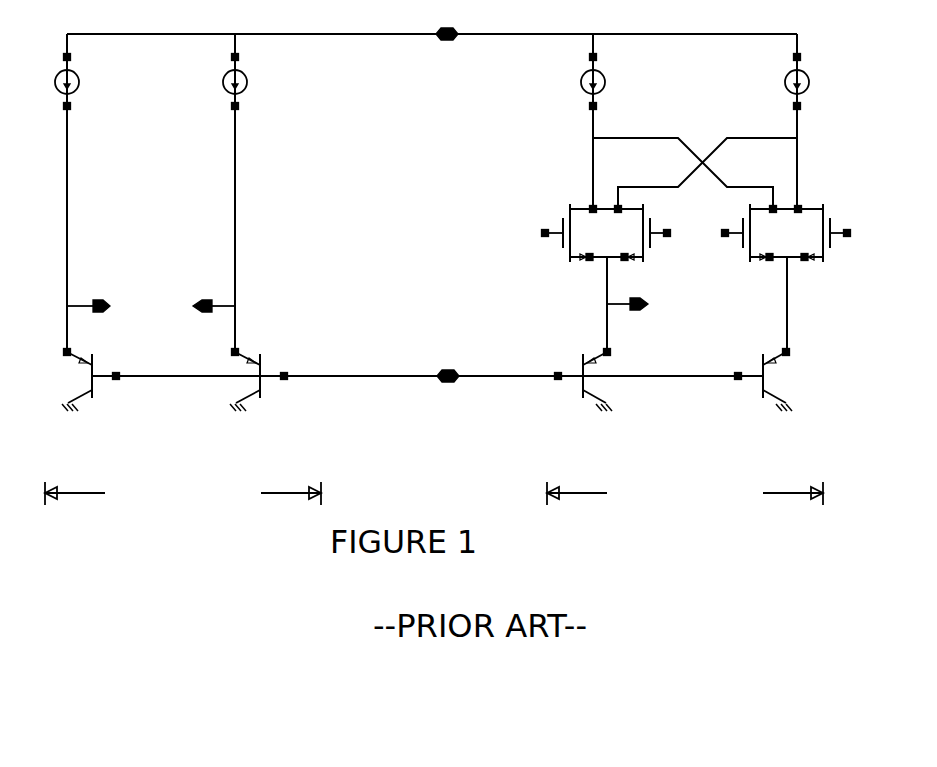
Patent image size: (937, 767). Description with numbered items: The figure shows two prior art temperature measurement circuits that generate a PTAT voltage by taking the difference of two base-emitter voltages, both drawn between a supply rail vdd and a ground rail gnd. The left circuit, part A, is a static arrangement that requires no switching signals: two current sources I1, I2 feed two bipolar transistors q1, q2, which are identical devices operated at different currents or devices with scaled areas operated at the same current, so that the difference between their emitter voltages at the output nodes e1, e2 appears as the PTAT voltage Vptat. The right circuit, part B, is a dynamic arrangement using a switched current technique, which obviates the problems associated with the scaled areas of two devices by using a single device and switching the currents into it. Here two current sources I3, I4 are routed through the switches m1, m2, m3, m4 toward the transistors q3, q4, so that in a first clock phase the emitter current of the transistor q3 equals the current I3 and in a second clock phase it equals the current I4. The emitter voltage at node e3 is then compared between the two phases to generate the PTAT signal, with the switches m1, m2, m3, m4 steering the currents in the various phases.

The positive supply rail vdd is at (432, 27).
The ground rail gnd is at (427, 368).
The current source I1 is at (54, 193).
The current source I2 is at (221, 193).
The current I3 is at (579, 121).
The current I4 is at (783, 121).
The switch m1 is at (546, 231).
The switch m2 is at (663, 231).
The switch m3 is at (725, 231).
The switch m4 is at (843, 231).
The bipolar transistor q1 is at (91, 380).
The bipolar transistor q2 is at (259, 380).
The single device q3 is at (580, 380).
The bipolar transistor q4 is at (761, 380).
The output terminal e1 is at (99, 307).
The output terminal e2 is at (201, 307).
The output terminal e3 is at (638, 306).
The PTAT voltage Vptat is at (157, 252).
The part A is at (183, 488).
The part B is at (685, 492).